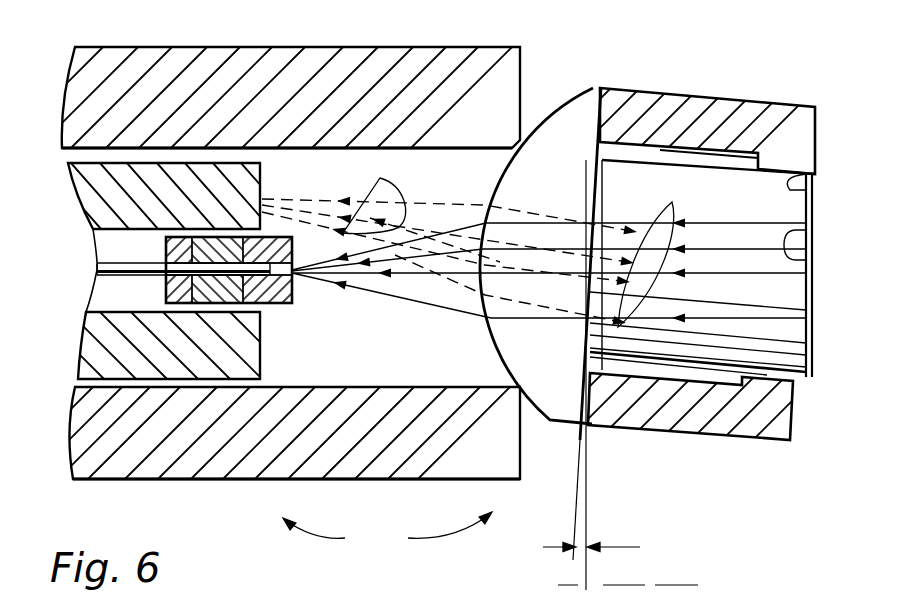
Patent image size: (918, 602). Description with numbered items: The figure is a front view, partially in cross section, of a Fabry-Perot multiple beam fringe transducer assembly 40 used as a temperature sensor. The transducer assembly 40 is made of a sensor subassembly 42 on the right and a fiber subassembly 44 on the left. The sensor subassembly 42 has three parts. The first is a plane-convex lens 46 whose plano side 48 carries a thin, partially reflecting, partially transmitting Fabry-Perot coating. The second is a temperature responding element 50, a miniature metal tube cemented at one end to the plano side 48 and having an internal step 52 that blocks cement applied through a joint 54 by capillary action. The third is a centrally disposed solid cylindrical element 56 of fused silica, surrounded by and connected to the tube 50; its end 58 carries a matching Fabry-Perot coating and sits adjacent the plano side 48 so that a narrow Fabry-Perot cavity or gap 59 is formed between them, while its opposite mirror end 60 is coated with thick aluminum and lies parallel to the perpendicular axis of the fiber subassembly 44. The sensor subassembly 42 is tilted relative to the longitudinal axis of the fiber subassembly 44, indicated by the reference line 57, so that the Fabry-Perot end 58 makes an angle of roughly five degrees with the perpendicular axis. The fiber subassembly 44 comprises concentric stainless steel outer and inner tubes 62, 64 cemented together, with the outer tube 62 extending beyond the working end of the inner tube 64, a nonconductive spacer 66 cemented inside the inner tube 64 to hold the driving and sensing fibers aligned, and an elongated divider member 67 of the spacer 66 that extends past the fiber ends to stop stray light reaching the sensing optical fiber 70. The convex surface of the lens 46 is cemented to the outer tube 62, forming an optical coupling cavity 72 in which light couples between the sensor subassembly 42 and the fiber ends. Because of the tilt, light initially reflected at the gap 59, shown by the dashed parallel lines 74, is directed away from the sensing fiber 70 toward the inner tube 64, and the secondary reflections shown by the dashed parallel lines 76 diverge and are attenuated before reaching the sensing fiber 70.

The Fabry-Perot multiple beam fringe transducer assembly 40 is at (387, 531).
The sensor subassembly 42 is at (571, 253).
The fiber subassembly 44 is at (0, 0).
The plane-convex lens 46 is at (578, 123).
The plano side of the lens 48 is at (596, 347).
The temperature responding element 50 is at (772, 425).
The internal step 52 is at (747, 152).
The joint 54 is at (813, 184).
The cylindrical element 56 is at (752, 345).
The reference line 57 is at (628, 585).
The Fabry-Perot end of the cylindrical element 58 is at (605, 180).
The Fabry-Perot cavity or gap 59 is at (588, 196).
The mirror end of the cylindrical element 60 is at (806, 238).
The outer stainless steel tube 62 is at (85, 418).
The inner stainless steel tube 64 is at (110, 186).
The nonconductive spacer 66 is at (192, 247).
The elongated divider member 67 is at (280, 292).
The sensing optical fiber 70 is at (120, 280).
The optical coupling cavity 72 is at (412, 365).
The dashed parallel lines (first reflected light beams) 74 is at (368, 195).
The dashed parallel lines (secondary reflected light beams) 76 is at (487, 256).